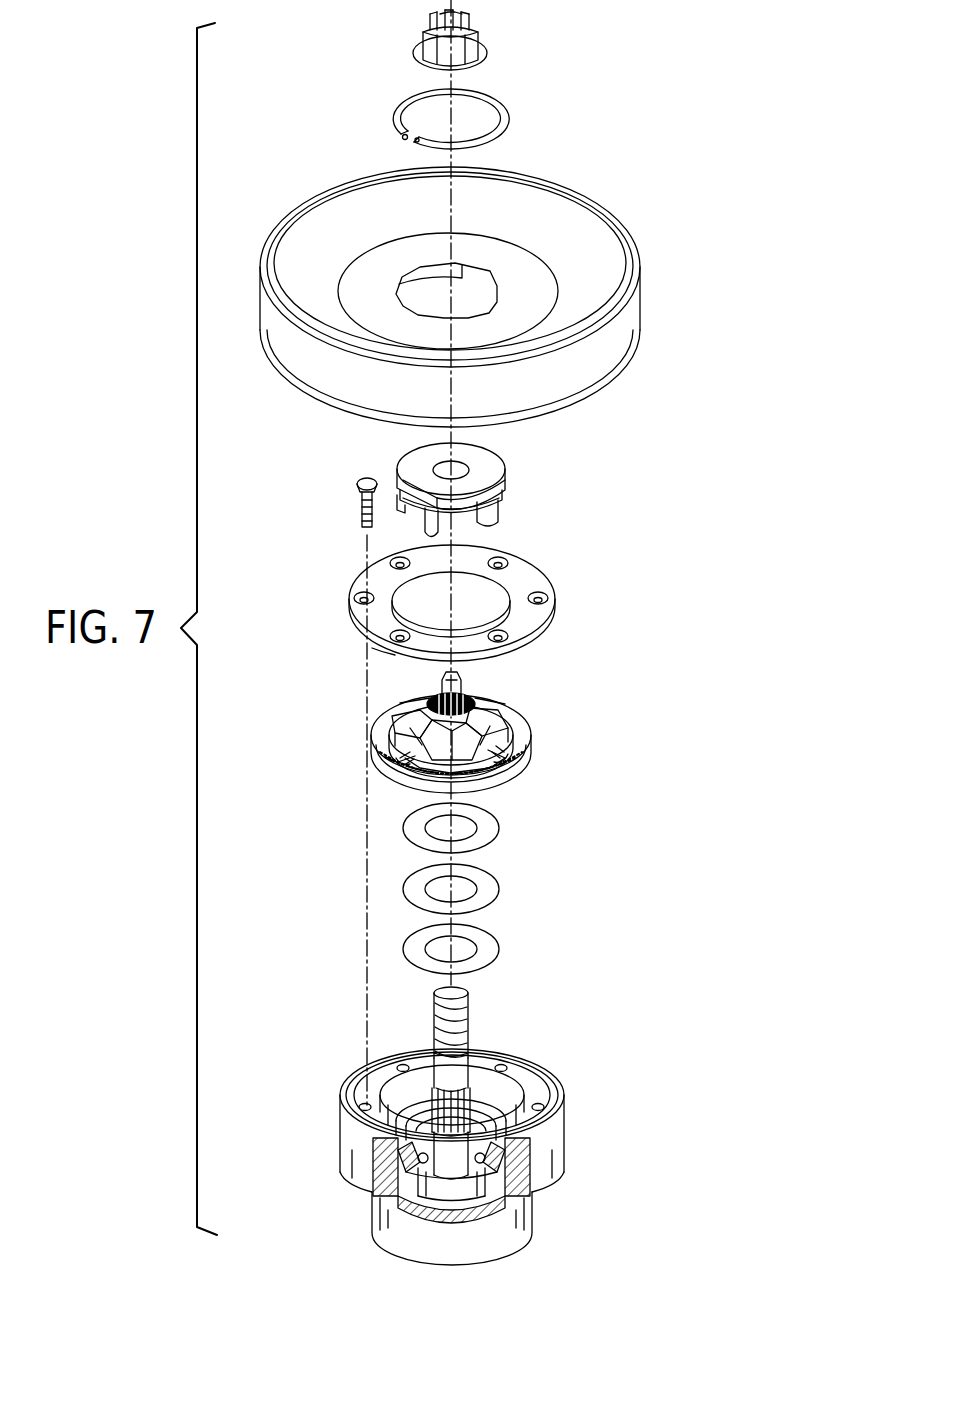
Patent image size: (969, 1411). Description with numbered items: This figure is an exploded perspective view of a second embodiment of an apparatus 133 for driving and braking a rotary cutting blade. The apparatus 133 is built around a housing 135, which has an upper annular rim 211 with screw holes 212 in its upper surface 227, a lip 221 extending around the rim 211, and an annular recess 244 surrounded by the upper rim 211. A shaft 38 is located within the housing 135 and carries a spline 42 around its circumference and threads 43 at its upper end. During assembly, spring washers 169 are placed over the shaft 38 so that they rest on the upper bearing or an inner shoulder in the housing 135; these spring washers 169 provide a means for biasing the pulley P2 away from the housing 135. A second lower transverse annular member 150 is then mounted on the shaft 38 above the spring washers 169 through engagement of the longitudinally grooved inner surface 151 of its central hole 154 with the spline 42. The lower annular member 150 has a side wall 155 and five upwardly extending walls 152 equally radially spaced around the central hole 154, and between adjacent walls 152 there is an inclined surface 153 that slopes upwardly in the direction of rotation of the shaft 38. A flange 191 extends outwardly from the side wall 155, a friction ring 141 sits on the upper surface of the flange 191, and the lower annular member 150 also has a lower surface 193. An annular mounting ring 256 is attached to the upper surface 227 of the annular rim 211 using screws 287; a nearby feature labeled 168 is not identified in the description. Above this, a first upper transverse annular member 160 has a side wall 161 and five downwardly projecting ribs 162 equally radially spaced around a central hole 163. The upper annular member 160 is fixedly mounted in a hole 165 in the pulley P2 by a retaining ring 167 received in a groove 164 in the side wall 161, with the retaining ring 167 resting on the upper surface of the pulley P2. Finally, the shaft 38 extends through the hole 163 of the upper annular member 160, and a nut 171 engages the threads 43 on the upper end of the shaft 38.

The nut 171 is at (493, 27).
The retaining ring 167 is at (516, 94).
The hole in pulley 165 is at (470, 296).
The pulley P2 is at (475, 297).
The central hole 163 is at (457, 466).
The groove 164 is at (451, 476).
The first upper transverse annular member 160 is at (459, 499).
The side wall 161 is at (506, 494).
The downwardly projecting ribs 162 is at (415, 531).
The screws 287 is at (350, 503).
The annular mounting ring 256 is at (568, 597).
The flange underside 168 is at (382, 653).
The second lower transverse annular member 150 is at (471, 743).
The longitudinally grooved inner surface 151 is at (438, 685).
The central hole 154 is at (476, 695).
The upwardly extending walls 152 is at (483, 667).
The friction ring 141 is at (381, 722).
The inclined surface 153 is at (523, 729).
The side wall 155 is at (518, 752).
The flange 191 is at (518, 772).
The lower surface 193 is at (492, 795).
The apparatus 133 is at (472, 748).
The spring washers 169 is at (491, 832).
The threads 43 is at (485, 1013).
The shaft 38 is at (460, 1064).
The annular recess 244 is at (410, 1097).
The upper surface 227 is at (370, 1088).
The upper annular rim 211 is at (451, 1137).
The screw holes 212 is at (403, 1064).
The lip 221 is at (553, 1133).
The spline 42 is at (382, 1186).
The housing 135 is at (451, 1137).